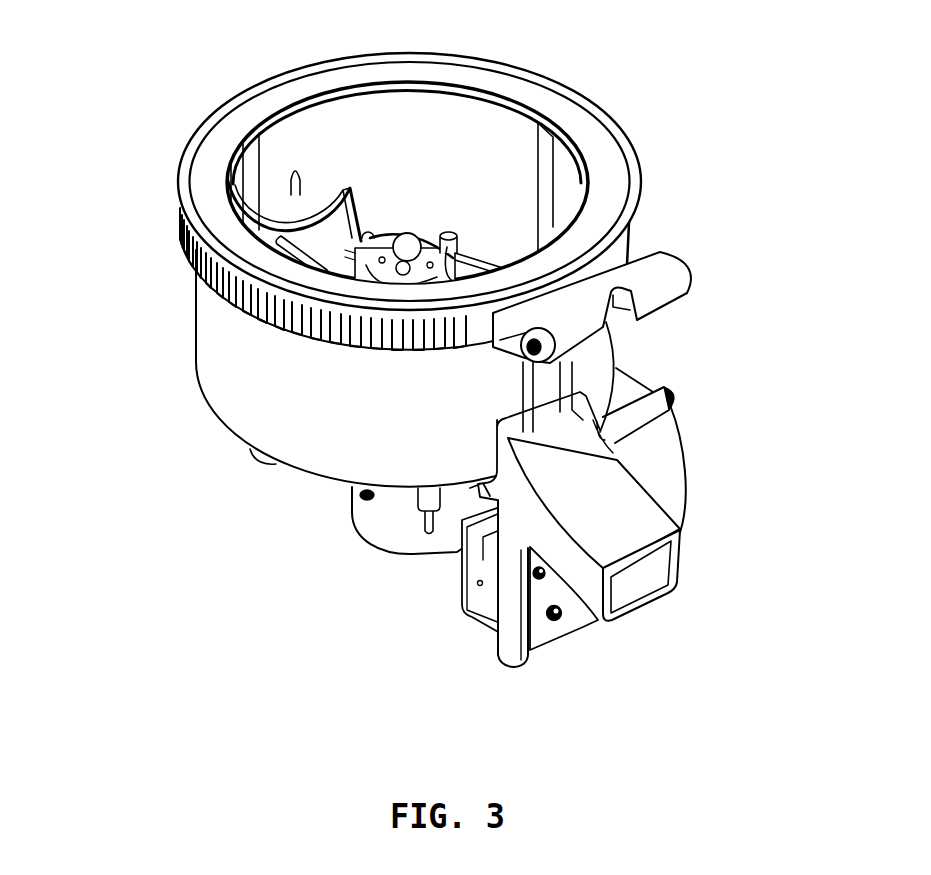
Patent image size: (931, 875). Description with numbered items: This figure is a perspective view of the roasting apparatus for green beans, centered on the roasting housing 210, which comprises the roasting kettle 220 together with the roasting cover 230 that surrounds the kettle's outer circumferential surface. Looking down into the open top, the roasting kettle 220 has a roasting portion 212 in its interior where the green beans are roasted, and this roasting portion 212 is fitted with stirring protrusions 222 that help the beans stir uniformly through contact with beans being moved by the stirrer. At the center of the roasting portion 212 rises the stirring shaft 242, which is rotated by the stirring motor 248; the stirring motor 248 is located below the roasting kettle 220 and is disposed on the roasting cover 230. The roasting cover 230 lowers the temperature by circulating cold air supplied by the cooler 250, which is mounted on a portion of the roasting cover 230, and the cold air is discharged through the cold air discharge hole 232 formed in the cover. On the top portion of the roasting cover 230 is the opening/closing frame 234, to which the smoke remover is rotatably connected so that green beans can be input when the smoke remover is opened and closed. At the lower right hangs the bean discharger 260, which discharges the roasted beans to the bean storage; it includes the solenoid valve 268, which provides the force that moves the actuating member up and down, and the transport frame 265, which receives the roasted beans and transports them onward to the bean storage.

The roasting housing 210 is at (435, 362).
The roasting portion 212 is at (404, 163).
The roasting kettle 220 is at (593, 143).
The stirring protrusions 222 is at (535, 140).
The roasting cover 230 is at (632, 176).
The cold air discharge hole 232 is at (180, 237).
The opening/closing frame 234 is at (673, 273).
The stirring shaft 242 is at (412, 213).
The stirring motor 248 is at (360, 533).
The cooler 250 is at (657, 460).
The bean discharger 260 is at (636, 642).
The transport frame 265 is at (630, 512).
The solenoid valve 268 is at (462, 613).